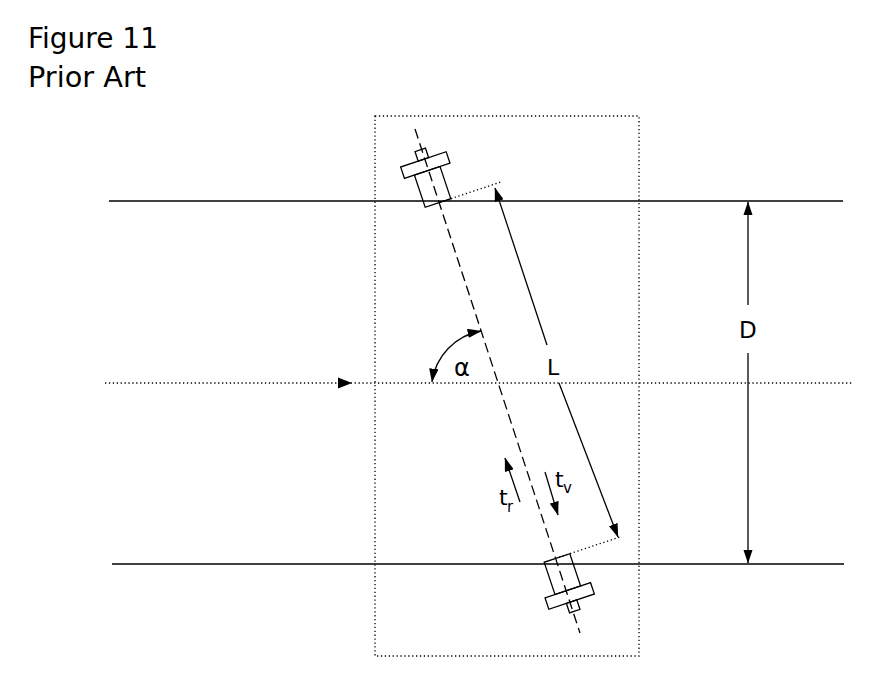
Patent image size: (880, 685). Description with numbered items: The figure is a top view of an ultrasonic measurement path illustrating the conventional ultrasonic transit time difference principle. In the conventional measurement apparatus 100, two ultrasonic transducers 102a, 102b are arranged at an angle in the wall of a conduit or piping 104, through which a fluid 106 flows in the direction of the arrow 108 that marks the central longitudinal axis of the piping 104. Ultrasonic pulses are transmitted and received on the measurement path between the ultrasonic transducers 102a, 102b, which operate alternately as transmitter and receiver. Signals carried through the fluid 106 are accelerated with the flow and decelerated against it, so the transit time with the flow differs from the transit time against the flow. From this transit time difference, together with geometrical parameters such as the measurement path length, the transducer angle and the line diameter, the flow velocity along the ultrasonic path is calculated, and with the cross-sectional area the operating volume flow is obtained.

The conventional measurement apparatus 100 is at (639, 177).
The ultrasonic transducer 102a is at (411, 171).
The ultrasonic transducer 102b is at (552, 587).
The piping 104 is at (243, 201).
The fluid 106 is at (233, 525).
The arrow 108 is at (233, 380).